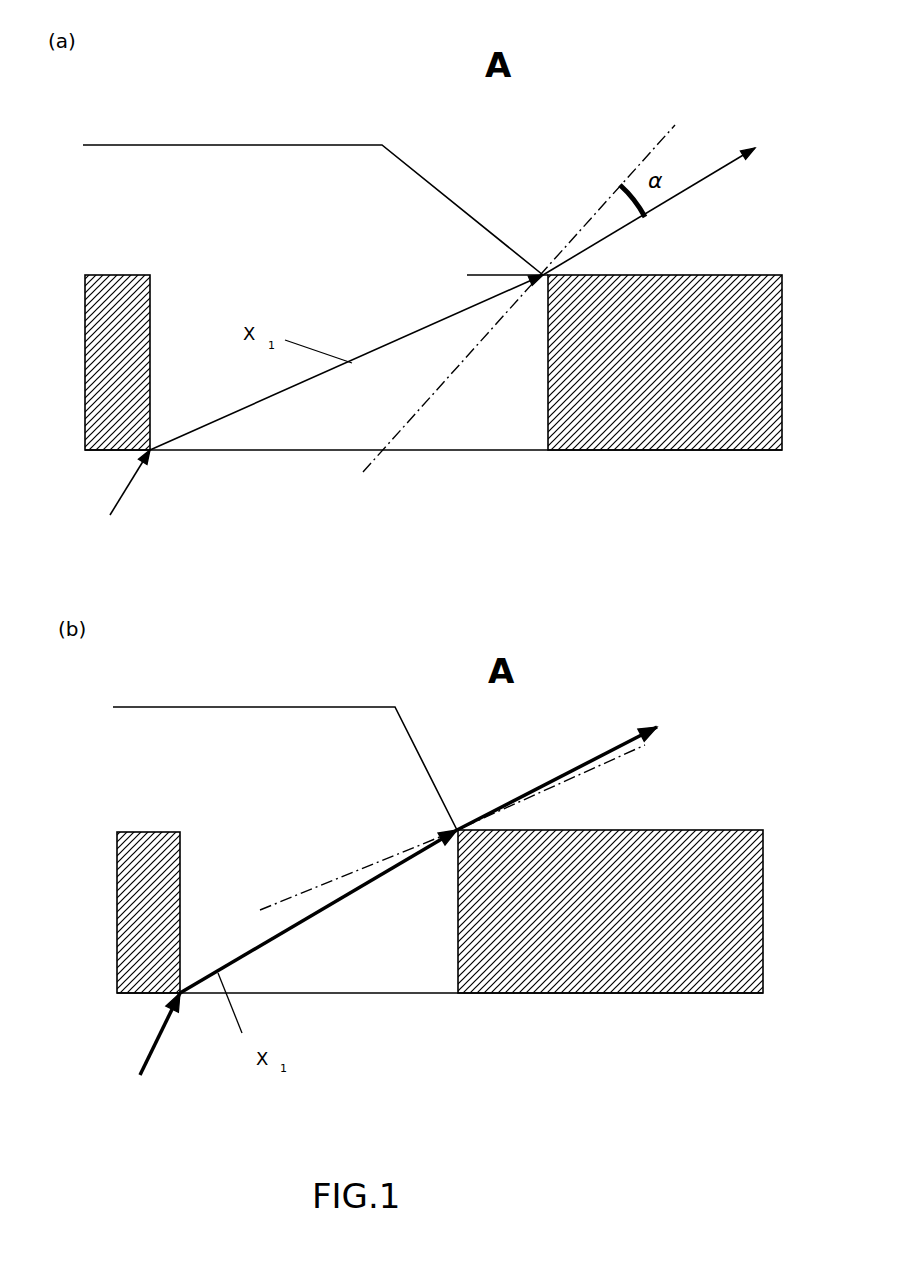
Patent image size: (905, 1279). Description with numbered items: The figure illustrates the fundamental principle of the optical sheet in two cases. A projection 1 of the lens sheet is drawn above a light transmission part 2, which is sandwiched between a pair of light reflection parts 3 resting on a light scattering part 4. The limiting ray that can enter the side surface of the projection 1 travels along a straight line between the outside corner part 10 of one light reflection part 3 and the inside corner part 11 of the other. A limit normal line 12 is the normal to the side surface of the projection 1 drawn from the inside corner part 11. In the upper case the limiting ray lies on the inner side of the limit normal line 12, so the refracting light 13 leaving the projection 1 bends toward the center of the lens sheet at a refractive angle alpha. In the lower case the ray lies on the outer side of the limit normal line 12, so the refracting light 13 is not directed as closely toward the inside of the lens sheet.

The projection 1 is at (465, 190).
The light transmission part 2 is at (349, 633).
The light reflection part 3 is at (718, 428).
The light scattering part 4 is at (433, 761).
The outside corner part 10 is at (152, 454).
The inside corner part 11 is at (454, 283).
The limit normal line 12 is at (403, 428).
The refracting light 13 is at (695, 192).